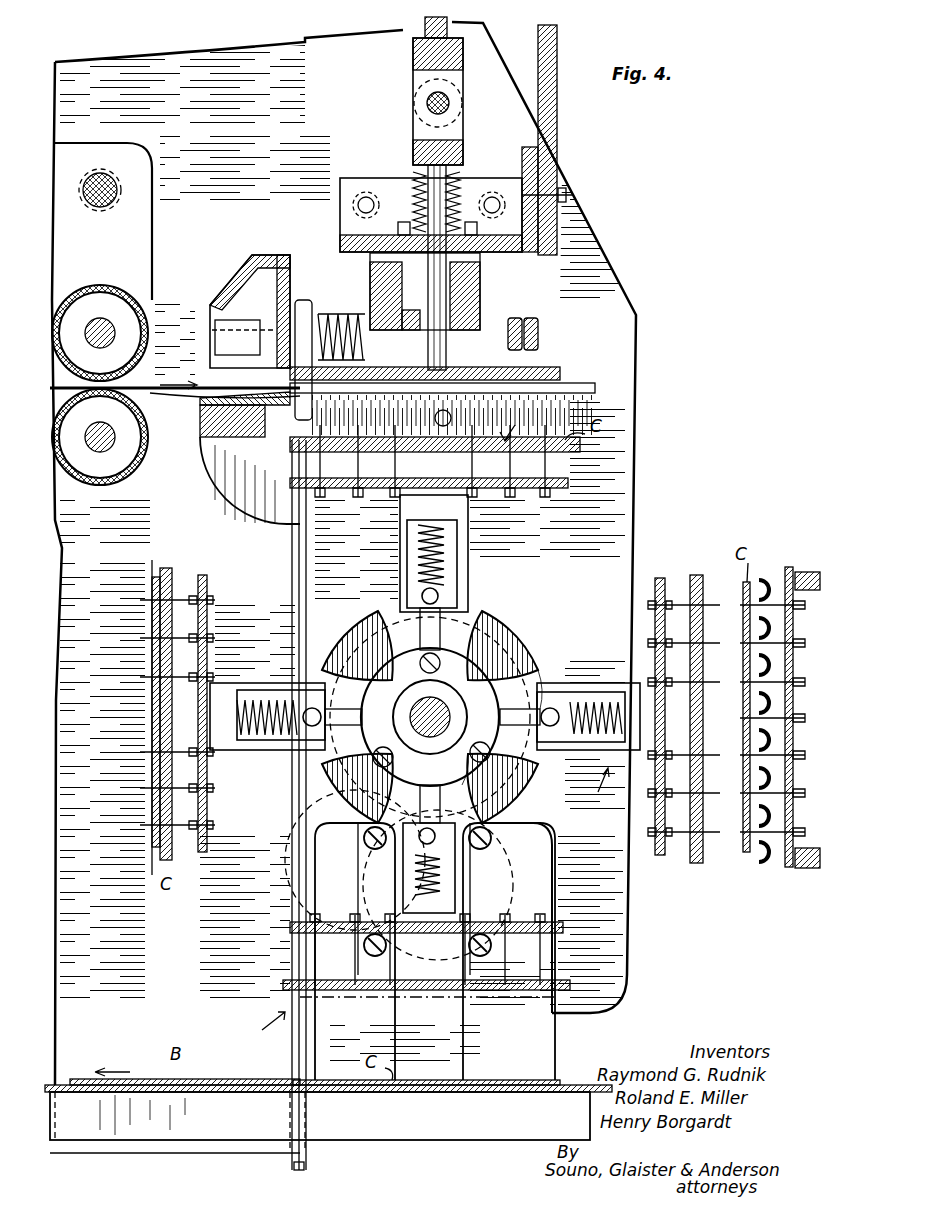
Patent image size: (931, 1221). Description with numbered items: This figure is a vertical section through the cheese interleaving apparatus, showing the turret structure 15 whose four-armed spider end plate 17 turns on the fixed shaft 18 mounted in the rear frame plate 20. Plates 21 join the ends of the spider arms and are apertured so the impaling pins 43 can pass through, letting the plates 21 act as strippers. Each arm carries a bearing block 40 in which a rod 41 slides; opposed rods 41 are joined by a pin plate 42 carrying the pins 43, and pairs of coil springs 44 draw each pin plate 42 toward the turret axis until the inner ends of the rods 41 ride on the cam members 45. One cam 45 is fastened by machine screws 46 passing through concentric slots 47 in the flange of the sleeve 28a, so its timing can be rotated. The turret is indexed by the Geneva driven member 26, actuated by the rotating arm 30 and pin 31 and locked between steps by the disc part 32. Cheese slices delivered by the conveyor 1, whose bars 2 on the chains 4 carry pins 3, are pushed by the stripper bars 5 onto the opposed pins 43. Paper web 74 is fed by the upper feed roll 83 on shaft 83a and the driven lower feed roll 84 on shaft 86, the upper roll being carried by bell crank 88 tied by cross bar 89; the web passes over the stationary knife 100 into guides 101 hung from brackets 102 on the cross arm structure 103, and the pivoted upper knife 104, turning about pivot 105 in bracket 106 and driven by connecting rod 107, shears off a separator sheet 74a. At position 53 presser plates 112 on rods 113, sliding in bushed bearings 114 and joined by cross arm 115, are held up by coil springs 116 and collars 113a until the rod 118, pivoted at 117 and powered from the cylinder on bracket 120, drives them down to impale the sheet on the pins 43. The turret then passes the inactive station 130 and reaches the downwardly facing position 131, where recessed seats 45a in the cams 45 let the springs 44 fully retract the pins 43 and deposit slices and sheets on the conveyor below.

The conveyor 1 is at (785, 868).
The conveyor bars 2 is at (789, 567).
The pins 3 is at (728, 702).
The conveyor chains 4 is at (805, 572).
The stripper bars 5 is at (755, 742).
The turret structure 15 is at (597, 787).
The end plate 17 is at (400, 570).
The shaft 18 is at (430, 717).
The rear frame plate 20 is at (597, 232).
The turret plates 21 is at (580, 448).
The driven member 26 is at (505, 640).
The flanged sleeve 28a is at (430, 709).
The rotating arm 30 is at (330, 855).
The pin 31 is at (330, 802).
The disc part 32 is at (453, 885).
The bearing blocks 40 is at (262, 690).
The rods 41 is at (468, 640).
The pin plates 42 is at (270, 928).
The impaling pins 43 is at (545, 472).
The coil springs 44 is at (265, 735).
The cam members 45 is at (535, 670).
The recessed seats 45a is at (471, 769).
The machine screws 46 is at (417, 652).
The slots 47 is at (432, 724).
The position 53 is at (580, 440).
The paper web 74 is at (175, 375).
The separator sheet 74a is at (492, 421).
The upper feed roll 83 is at (135, 284).
The shaft 83a is at (100, 333).
The lower feed roll 84 is at (140, 482).
The shaft 86 is at (100, 440).
The bell crank 88 is at (150, 215).
The cross bar 89 is at (100, 208).
The stationary knife 100 is at (200, 436).
The guides 101 is at (595, 388).
The brackets 102 is at (480, 300).
The cross arm structure 103 is at (340, 232).
The upper knife 104 is at (250, 311).
The pivot 105 is at (541, 338).
The bracket 106 is at (250, 480).
The connecting rod 107 is at (293, 1062).
The presser plates 112 is at (560, 373).
The rods 113 is at (524, 195).
The collars 113a is at (402, 318).
The bushed bearings 114 is at (375, 288).
The cross arm 115 is at (413, 155).
The coil springs 116 is at (446, 196).
The pivotal connection 117 is at (425, 104).
The rod 118 is at (425, 28).
The bracket 120 is at (558, 130).
The inactive station 130 is at (152, 560).
The downwardly facing position 131 is at (253, 1026).